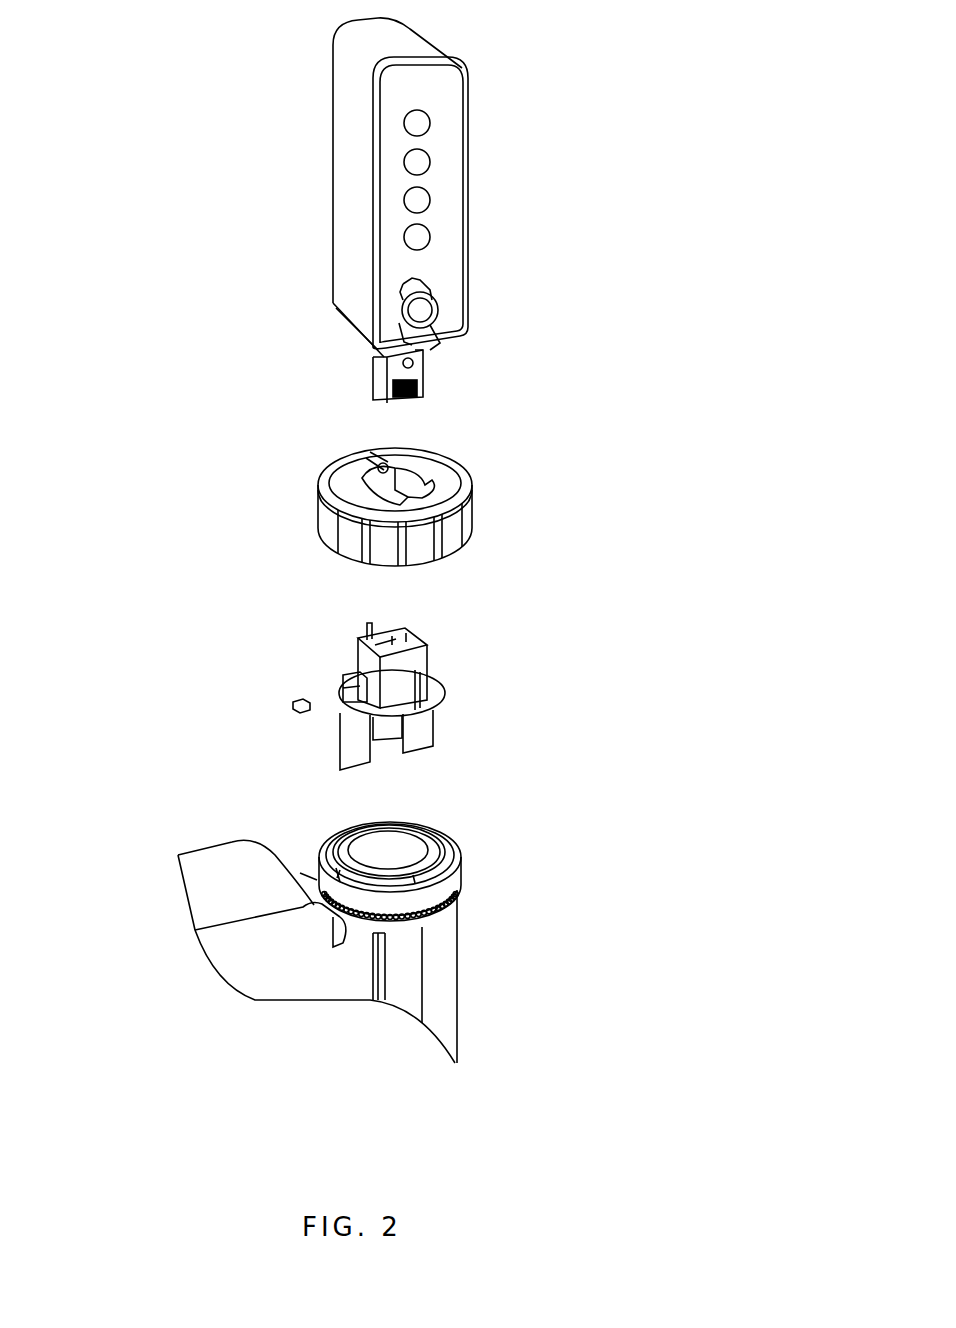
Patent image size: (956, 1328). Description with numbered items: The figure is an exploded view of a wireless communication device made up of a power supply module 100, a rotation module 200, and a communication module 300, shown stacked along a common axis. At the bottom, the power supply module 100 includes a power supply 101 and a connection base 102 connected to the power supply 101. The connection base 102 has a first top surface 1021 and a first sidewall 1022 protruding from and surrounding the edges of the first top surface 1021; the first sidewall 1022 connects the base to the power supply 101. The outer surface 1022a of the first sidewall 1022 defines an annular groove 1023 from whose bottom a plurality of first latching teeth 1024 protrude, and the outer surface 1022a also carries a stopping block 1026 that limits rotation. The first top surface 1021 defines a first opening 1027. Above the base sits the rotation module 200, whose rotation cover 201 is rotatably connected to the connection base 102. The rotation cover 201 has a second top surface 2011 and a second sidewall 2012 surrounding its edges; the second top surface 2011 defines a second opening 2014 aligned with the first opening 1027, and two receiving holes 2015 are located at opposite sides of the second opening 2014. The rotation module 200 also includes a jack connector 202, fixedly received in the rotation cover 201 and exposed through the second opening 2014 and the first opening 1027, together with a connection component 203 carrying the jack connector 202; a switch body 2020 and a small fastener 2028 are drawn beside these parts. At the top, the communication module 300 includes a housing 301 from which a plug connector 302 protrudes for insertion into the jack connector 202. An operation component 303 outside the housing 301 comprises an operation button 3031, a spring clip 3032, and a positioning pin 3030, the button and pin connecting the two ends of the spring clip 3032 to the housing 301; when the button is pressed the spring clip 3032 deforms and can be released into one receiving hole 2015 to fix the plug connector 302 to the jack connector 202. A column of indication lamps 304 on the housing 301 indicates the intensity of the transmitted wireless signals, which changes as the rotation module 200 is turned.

The power supply module 100 is at (246, 962).
The power supply 101 is at (447, 995).
The connection base 102 is at (463, 860).
The first top surface 1021 is at (373, 840).
The first sidewall 1022 is at (459, 878).
The outer surface 1022a is at (395, 898).
The annular groove 1023 is at (442, 910).
The first latching teeth 1024 is at (434, 913).
The stopping block 1026 is at (387, 850).
The first opening 1027 is at (337, 870).
The rotation module 200 is at (588, 468).
The rotation cover 201 is at (471, 478).
The second top surface 2011 is at (336, 480).
The second sidewall 2012 is at (334, 528).
The second opening 2014 is at (413, 475).
The receiving holes 2015 is at (382, 466).
The jack connector 202 is at (431, 651).
The switch body 2020 is at (390, 668).
The fastener 2028 is at (292, 702).
The connection component 203 is at (444, 712).
The communication module 300 is at (463, 63).
The housing 301 is at (443, 217).
The plug connector 302 is at (415, 373).
The operation component 303 is at (424, 290).
The positioning pin 3030 is at (400, 378).
The operation button 3031 is at (420, 312).
The spring clip 3032 is at (412, 332).
The indication lamps 304 is at (415, 125).